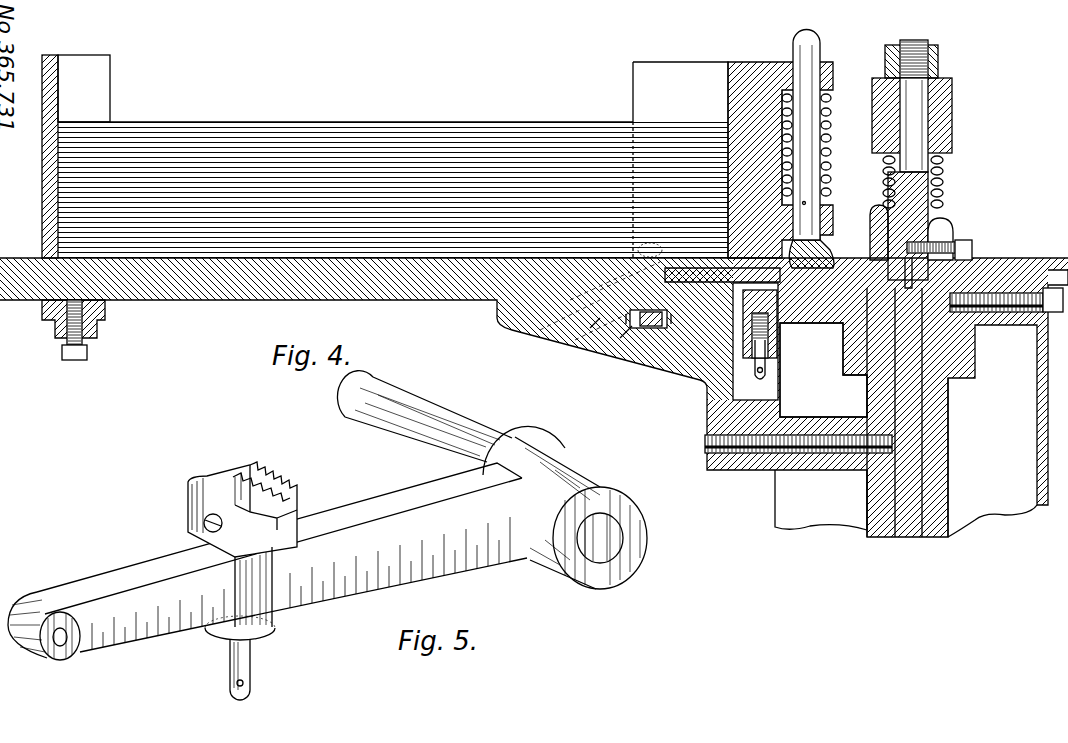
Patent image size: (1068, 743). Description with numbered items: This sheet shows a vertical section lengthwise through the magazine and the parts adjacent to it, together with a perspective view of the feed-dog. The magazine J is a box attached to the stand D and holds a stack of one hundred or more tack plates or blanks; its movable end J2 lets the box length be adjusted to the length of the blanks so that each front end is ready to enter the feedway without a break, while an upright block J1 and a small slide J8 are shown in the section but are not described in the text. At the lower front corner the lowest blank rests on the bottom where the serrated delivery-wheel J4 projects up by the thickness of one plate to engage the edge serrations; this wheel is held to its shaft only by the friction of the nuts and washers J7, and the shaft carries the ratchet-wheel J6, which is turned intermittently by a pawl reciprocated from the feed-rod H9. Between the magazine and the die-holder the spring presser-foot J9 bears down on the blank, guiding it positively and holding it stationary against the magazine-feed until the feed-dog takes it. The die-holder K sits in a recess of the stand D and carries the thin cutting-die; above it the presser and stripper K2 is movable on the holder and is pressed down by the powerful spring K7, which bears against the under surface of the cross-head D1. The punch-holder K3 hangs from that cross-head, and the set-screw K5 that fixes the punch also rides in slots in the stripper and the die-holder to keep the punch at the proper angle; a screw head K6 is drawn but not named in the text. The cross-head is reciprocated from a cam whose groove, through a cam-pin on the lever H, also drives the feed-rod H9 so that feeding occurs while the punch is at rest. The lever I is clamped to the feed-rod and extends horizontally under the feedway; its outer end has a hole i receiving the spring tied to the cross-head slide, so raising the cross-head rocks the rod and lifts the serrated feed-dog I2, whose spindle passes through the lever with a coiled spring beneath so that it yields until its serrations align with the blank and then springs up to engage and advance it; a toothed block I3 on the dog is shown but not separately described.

In FIG. 4, the magazine J is at (534, 397).
In FIG. 4, the upright block J' J1 is at (445, 160).
In FIG. 4, the movable end J2 is at (757, 377).
In FIG. 4, the delivery-wheel J4 is at (588, 340).
In FIG. 4, the ratchet-wheel J6 is at (618, 348).
In FIG. 4, the nuts and washers J7 is at (822, 254).
In FIG. 4, the slide block J8 is at (640, 330).
In FIG. 4, the spring presser-foot J9 is at (807, 124).
In FIG. 4, the die-holder K is at (953, 236).
In FIG. 4, the presser and stripper K2 is at (940, 212).
In FIG. 4, the punch-holder K3 is at (944, 165).
In FIG. 4, the set-screw K5 is at (972, 247).
In FIG. 4, the screw head K6 is at (938, 64).
In FIG. 4, the spring K7 is at (885, 194).
In FIG. 4, the stand D is at (823, 370).
In FIG. 4, the cross-head D1 is at (952, 118).
In FIG. 4, the lever H is at (906, 412).
In FIG. 5, the feed-rod H9 is at (492, 480).
In FIG. 5, the lever I is at (282, 557).
In FIG. 5, the feed-dog I2 is at (248, 684).
In FIG. 5, the toothed clamp block I3 is at (202, 518).
In FIG. 5, the hole i is at (44, 634).